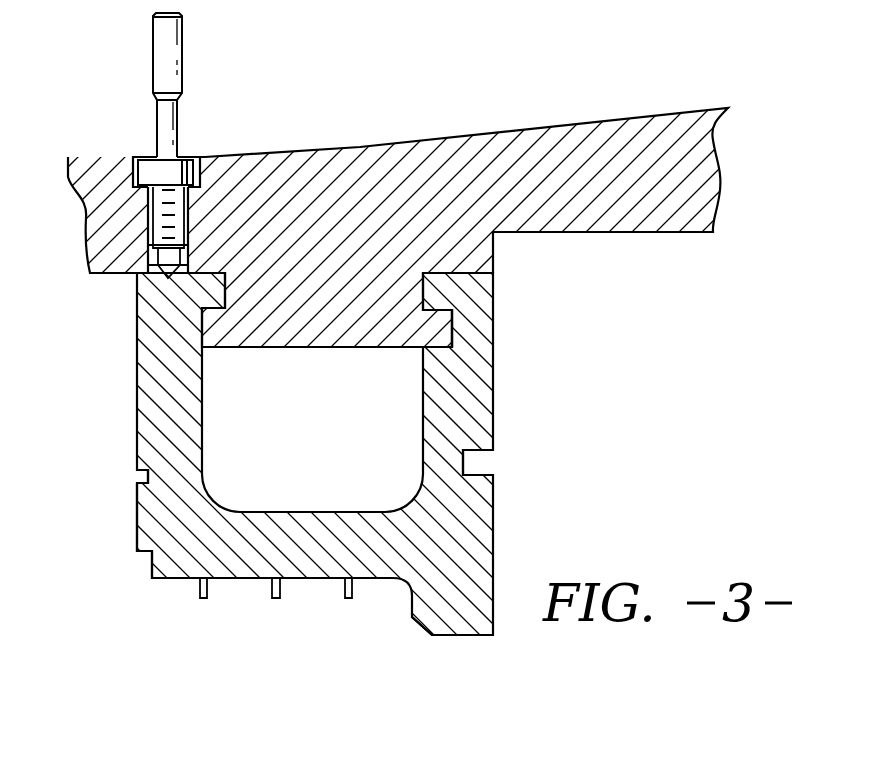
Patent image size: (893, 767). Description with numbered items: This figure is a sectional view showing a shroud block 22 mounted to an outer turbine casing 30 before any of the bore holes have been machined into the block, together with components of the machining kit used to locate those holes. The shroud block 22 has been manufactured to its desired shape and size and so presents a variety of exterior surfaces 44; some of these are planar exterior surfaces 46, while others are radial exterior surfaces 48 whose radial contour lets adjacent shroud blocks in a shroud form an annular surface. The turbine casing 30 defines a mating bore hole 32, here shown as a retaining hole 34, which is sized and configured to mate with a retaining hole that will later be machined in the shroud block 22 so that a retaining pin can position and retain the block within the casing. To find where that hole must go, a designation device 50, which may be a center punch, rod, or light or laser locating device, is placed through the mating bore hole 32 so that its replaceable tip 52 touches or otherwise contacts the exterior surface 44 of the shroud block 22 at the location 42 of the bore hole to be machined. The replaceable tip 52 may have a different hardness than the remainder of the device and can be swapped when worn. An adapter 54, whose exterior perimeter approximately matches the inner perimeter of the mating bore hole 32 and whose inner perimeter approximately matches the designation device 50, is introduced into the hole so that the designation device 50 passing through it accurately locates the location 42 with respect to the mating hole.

The shroud block 22 is at (96, 556).
The turbine casing 30 is at (446, 213).
The mating bore hole 32 is at (105, 230).
The retaining hole 34 is at (109, 265).
The location of bore hole 42 is at (141, 326).
The exterior surface 44 is at (440, 433).
The planar exterior surface 46 is at (315, 472).
The radial exterior surface 48 is at (342, 341).
The designation device 50 is at (149, 99).
The replaceable tip 52 is at (121, 297).
The adapter 54 is at (220, 171).